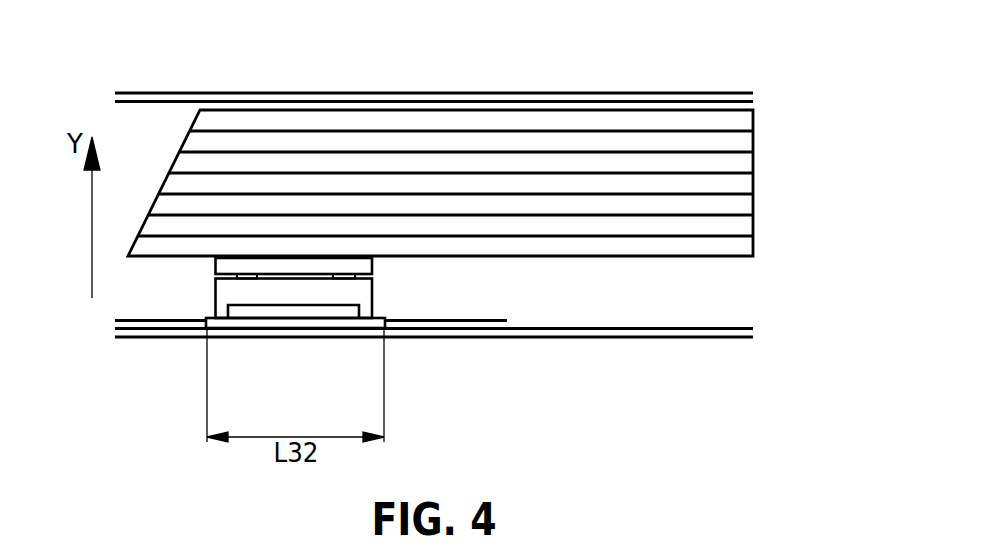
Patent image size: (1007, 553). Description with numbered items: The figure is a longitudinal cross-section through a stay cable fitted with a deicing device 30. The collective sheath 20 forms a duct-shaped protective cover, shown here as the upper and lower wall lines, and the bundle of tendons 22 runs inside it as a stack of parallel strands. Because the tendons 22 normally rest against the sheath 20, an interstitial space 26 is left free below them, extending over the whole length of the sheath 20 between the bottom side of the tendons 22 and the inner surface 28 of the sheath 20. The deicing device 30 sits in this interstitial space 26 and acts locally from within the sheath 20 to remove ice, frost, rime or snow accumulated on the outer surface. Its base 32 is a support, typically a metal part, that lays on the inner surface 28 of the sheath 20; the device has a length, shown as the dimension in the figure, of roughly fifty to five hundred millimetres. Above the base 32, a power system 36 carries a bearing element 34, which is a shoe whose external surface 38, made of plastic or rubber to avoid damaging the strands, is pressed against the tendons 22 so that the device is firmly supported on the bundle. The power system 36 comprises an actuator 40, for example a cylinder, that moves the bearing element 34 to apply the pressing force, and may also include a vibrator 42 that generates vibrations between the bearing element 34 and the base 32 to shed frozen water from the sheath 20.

The collective sheath 20 is at (550, 91).
The tendons 22 is at (262, 120).
The interstitial space 26 is at (726, 297).
The inner surface 28 is at (158, 104).
The deicing device 30 is at (300, 222).
The base 32 is at (337, 323).
The bearing element 34 is at (372, 262).
The power system 36 is at (372, 298).
The external surface 38 is at (360, 257).
The actuator 40 is at (265, 312).
The vibrator 42 is at (308, 287).